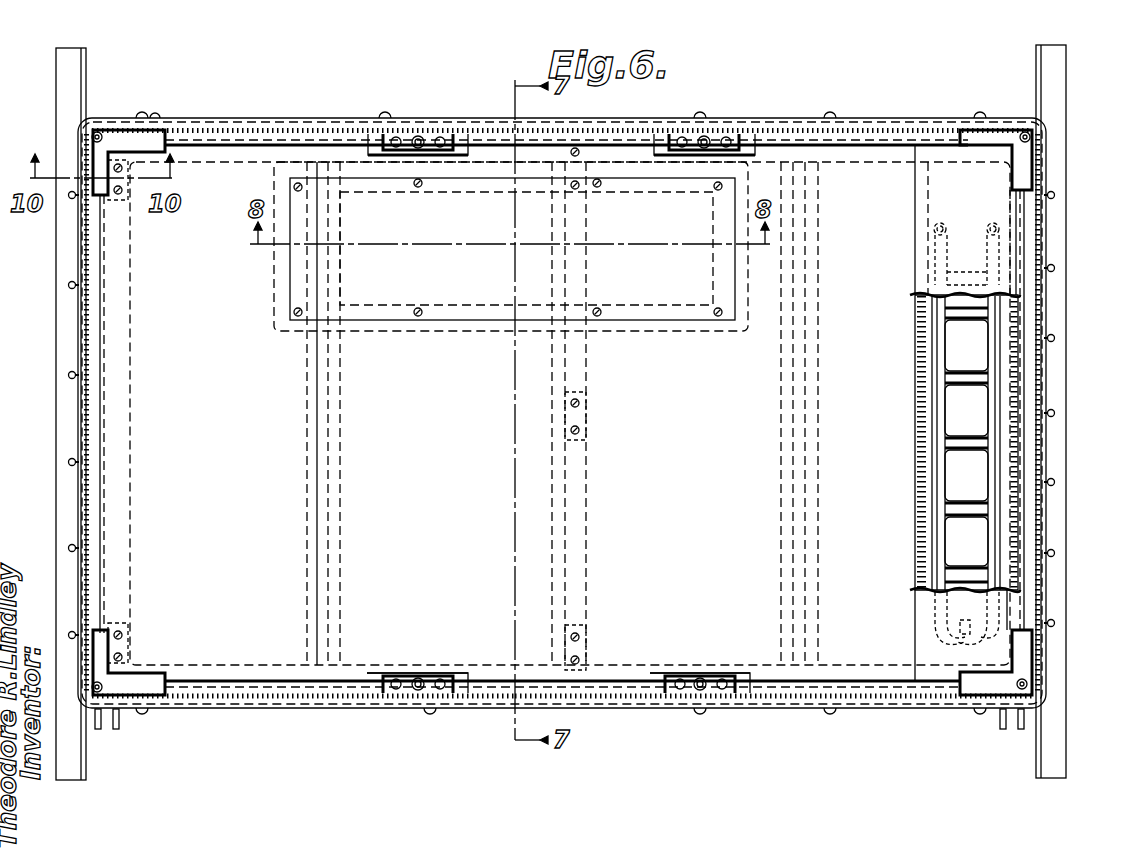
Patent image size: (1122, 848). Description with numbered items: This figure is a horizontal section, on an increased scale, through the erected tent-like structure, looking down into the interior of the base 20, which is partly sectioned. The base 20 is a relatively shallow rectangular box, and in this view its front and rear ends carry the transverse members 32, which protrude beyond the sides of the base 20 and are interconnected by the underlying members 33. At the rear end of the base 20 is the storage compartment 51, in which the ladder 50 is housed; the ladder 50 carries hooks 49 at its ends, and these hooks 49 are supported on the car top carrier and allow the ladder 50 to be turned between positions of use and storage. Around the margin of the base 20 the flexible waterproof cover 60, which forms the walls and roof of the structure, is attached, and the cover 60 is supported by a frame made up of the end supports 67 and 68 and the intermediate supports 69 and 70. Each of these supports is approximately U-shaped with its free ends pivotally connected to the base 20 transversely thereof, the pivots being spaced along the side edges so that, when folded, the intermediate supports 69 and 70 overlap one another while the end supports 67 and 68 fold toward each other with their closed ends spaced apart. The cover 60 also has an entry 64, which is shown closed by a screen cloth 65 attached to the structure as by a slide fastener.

The base 20 is at (150, 302).
The transverse members 32 is at (62, 88).
The underlying members 33 is at (872, 136).
The hooks 49 is at (939, 648).
The ladder 50 is at (960, 396).
The storage compartment 51 is at (954, 200).
The cover 60 is at (630, 130).
The entry 64 is at (454, 706).
The screen cloth 65 is at (598, 706).
The end support 67 is at (99, 134).
The end support 68 is at (1024, 134).
The intermediate support 69 is at (416, 138).
The intermediate support 70 is at (706, 136).